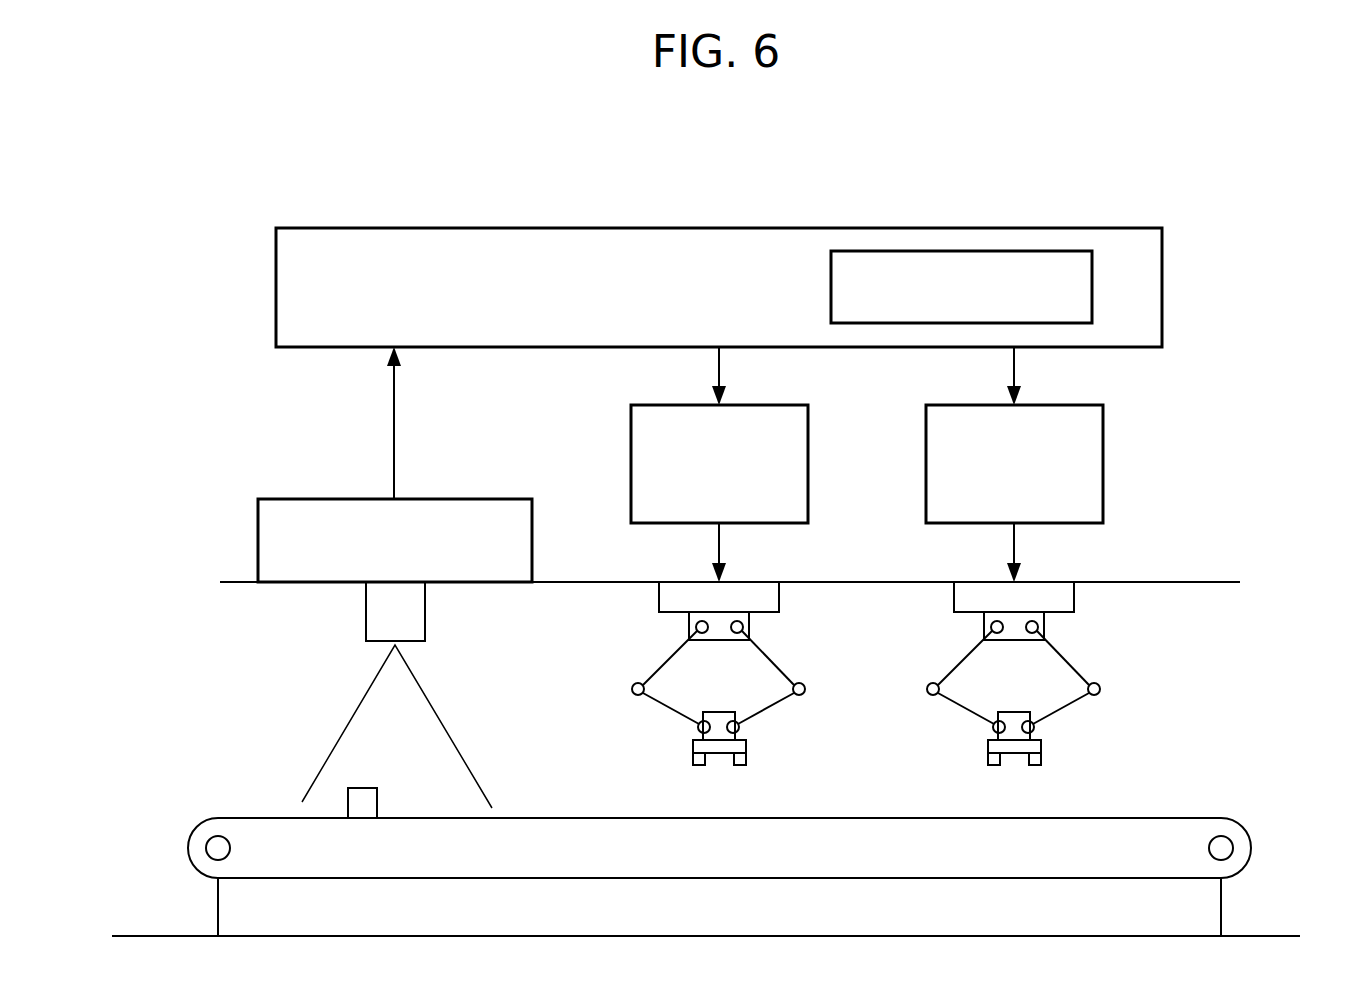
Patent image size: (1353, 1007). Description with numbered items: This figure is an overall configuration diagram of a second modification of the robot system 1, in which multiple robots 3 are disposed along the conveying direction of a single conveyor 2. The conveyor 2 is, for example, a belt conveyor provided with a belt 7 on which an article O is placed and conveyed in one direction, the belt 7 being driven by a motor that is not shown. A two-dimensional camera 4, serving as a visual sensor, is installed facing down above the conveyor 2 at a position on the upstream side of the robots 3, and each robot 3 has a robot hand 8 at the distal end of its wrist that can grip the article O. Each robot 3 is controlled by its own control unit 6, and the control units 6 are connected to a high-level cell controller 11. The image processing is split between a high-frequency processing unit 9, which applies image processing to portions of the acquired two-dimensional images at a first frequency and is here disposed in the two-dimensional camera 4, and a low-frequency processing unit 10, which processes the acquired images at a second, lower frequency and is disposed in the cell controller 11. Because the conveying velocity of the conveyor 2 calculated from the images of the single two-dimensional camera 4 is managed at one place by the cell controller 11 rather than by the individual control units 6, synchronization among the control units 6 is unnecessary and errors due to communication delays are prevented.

The robot system 1 is at (200, 264).
The conveyor 2 is at (706, 819).
The robot 3 is at (806, 671).
The two-dimensional camera 4 is at (366, 613).
The control unit 6 is at (631, 463).
The belt 7 is at (1170, 818).
The robot hand 8 is at (742, 765).
The high-frequency processing unit 9 is at (347, 499).
The low-frequency processing unit 10 is at (940, 250).
The cell controller 11 is at (708, 228).
The article O is at (360, 788).